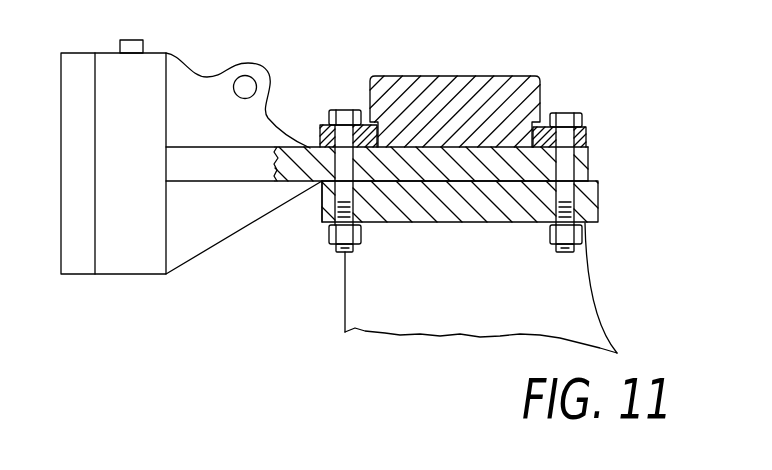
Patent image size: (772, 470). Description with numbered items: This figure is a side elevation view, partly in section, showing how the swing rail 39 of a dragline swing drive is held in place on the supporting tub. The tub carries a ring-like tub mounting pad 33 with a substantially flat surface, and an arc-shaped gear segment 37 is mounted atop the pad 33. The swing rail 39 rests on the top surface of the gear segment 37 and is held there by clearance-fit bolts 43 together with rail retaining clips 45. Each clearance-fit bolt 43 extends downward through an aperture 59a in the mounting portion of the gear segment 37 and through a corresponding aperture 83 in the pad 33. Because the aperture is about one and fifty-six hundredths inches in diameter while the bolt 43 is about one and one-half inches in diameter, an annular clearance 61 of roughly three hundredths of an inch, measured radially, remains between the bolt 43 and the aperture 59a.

The tub mounting pad 33 is at (598, 207).
The gear segment 37 is at (228, 238).
The swing rail 39 is at (530, 76).
The clearance-fit bolt 43 is at (344, 253).
The rail retaining clip 45 is at (587, 128).
The aperture 59a is at (318, 150).
The annular clearance 61 is at (588, 168).
The aperture 83 is at (322, 195).